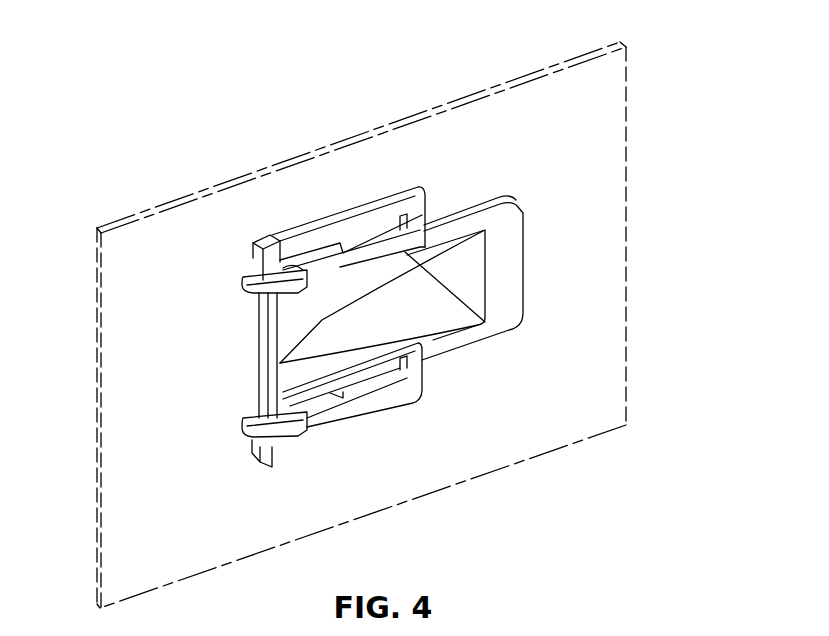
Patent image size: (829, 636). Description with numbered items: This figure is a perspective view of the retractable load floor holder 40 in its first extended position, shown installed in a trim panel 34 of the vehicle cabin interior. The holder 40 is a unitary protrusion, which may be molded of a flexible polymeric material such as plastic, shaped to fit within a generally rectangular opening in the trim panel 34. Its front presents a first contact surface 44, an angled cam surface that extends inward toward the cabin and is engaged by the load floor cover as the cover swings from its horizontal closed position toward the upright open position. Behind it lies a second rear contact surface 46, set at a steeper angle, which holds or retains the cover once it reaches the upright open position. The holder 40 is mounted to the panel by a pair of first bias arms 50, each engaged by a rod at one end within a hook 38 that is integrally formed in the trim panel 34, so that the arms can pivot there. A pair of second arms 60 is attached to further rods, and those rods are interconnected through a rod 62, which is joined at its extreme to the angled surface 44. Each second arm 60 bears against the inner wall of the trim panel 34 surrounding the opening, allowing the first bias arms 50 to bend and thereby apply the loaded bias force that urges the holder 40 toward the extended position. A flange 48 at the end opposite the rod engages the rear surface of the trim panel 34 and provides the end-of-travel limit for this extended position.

The trim panel 34 is at (577, 93).
The hook 38 is at (333, 250).
The retractable load floor holder 40 is at (394, 318).
The first contact surface 44 is at (327, 295).
The second rear contact surface 46 is at (472, 263).
The flange 48 is at (510, 276).
The first bias arms 50 is at (393, 245).
The second arms 60 is at (298, 265).
The rod 62 is at (263, 330).